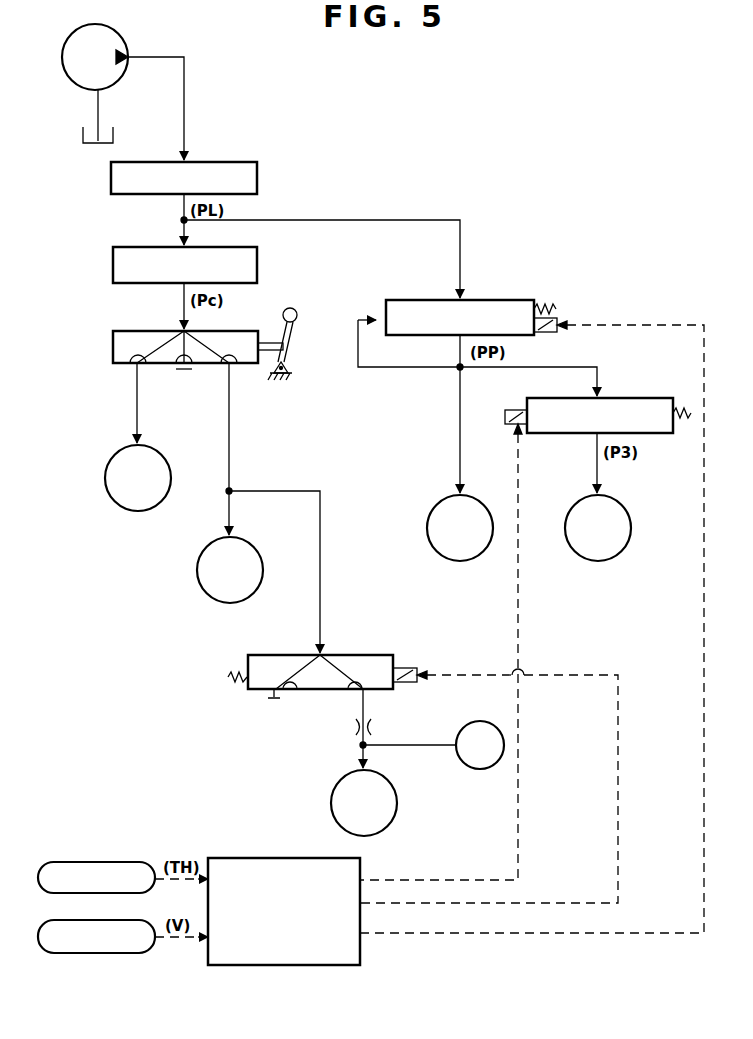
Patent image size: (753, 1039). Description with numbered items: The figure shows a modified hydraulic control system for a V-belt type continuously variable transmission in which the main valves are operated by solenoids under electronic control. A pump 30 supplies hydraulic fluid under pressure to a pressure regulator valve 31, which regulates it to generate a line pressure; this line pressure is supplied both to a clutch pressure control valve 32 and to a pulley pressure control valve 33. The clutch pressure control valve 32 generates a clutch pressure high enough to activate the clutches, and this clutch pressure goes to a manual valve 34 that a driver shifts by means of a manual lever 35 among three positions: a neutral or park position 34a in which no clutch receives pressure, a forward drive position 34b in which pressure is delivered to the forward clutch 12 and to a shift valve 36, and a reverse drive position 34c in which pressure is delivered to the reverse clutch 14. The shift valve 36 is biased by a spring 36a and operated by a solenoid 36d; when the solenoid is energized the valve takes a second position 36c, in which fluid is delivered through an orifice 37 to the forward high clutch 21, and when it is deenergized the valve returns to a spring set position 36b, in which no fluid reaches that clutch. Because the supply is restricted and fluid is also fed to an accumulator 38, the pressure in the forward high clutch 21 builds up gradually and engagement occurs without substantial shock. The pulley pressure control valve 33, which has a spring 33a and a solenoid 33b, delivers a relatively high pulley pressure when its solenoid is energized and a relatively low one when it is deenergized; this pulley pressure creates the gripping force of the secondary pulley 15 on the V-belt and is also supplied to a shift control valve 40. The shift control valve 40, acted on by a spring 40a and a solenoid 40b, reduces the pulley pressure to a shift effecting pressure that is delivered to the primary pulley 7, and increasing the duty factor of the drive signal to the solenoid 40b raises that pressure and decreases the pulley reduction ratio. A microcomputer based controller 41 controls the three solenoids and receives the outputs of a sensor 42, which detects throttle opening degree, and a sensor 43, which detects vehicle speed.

The pump 30 is at (124, 42).
The pressure regulator valve 31 is at (257, 172).
The clutch pressure control valve 32 is at (257, 270).
The manual valve 34 is at (174, 372).
The neutral or park position 34a is at (190, 368).
The forward drive position 34b is at (236, 366).
The reverse drive position 34c is at (128, 366).
The manual lever 35 is at (294, 343).
The reverse clutch 14 is at (143, 511).
The forward clutch 12 is at (203, 589).
The pulley pressure control valve 33 is at (496, 316).
The spring 33a is at (554, 308).
The solenoid 33b is at (552, 333).
The shift control valve 40 is at (588, 420).
The spring 40a is at (677, 425).
The solenoid 40b is at (510, 412).
The secondary pulley 15 is at (427, 528).
The primary pulley 7 is at (600, 562).
The shift valve 36 is at (337, 667).
The spring 36a is at (233, 684).
The spring set position 36b is at (285, 681).
The second position 36c is at (362, 682).
The solenoid 36d is at (410, 668).
The orifice 37 is at (356, 730).
The accumulator 38 is at (478, 769).
The forward high clutch 21 is at (397, 820).
The microcomputer based controller 41 is at (274, 858).
The sensor 42 is at (107, 862).
The sensor 43 is at (110, 953).